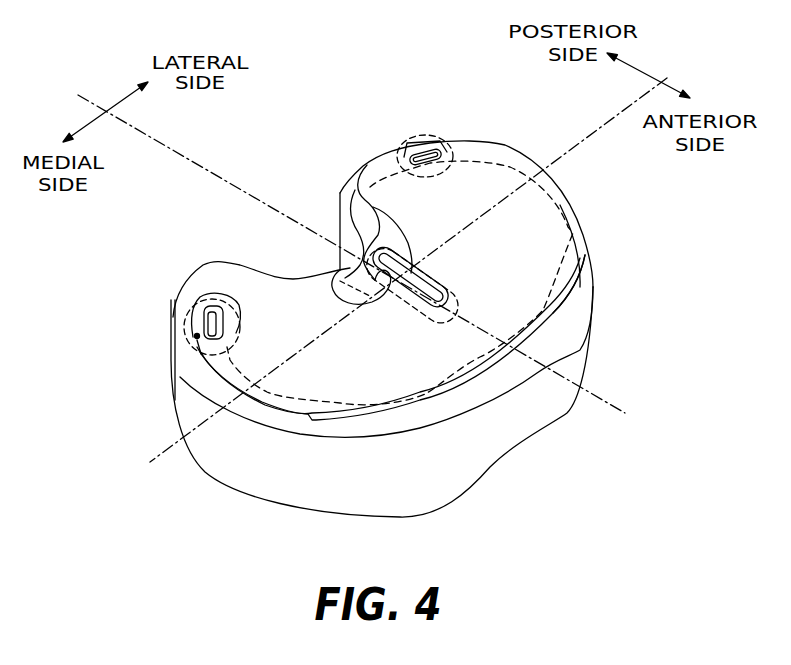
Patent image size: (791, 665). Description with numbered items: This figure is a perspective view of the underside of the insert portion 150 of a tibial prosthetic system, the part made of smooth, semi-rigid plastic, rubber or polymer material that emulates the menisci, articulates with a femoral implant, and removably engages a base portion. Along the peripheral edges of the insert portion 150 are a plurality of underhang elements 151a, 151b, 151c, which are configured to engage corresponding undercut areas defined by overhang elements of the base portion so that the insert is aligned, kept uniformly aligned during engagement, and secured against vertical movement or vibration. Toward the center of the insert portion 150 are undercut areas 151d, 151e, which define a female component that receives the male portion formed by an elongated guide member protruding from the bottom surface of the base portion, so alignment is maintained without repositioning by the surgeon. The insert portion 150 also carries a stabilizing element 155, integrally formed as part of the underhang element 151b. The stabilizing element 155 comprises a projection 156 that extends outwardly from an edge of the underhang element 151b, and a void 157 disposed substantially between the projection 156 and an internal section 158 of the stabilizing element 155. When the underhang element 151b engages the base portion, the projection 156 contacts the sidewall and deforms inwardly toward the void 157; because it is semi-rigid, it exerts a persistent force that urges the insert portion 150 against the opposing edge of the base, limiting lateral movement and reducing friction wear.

The insert portion 150 is at (490, 467).
The underhang element 151a is at (513, 156).
The underhang element 151b is at (263, 396).
The underhang element 151c is at (490, 360).
The undercut area 151d is at (378, 222).
The undercut area 151e is at (338, 282).
The stabilizing element 155 is at (425, 137).
The projection 156 is at (196, 334).
The void 157 is at (197, 350).
The internal section 158 is at (230, 318).